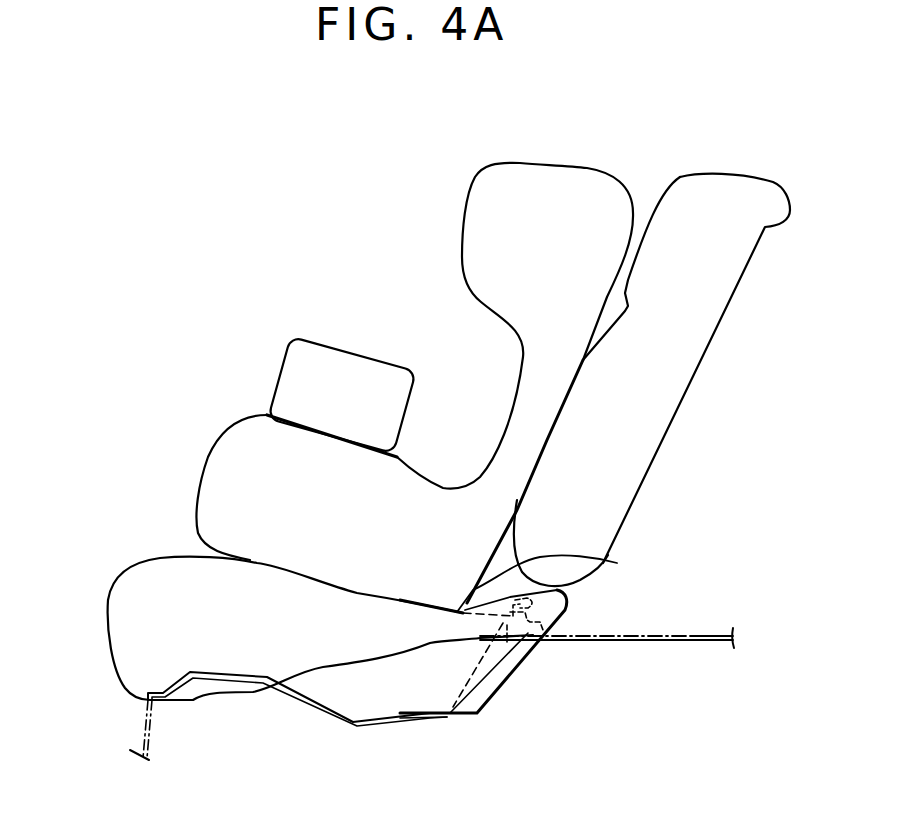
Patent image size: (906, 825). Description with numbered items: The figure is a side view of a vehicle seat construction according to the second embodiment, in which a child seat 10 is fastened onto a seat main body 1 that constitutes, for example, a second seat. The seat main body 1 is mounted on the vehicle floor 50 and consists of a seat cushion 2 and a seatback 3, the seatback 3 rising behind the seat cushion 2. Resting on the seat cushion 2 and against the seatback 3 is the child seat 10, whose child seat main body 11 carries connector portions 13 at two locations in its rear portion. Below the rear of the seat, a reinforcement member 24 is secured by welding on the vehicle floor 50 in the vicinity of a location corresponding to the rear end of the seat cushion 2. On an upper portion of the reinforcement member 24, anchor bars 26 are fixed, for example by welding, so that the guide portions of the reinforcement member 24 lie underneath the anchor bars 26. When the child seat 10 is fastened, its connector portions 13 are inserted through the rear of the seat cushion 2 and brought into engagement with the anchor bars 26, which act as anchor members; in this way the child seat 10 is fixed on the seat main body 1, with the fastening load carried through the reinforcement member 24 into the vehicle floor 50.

The seat main body 1 is at (718, 391).
The seat cushion 2 is at (127, 630).
The seatback 3 is at (637, 467).
The child seat 10 is at (530, 176).
The child seat main body 11 is at (230, 477).
The connector portions 13 is at (617, 563).
The reinforcement member 24 is at (527, 663).
The anchor bars 26 is at (543, 612).
The vehicle floor 50 is at (696, 634).